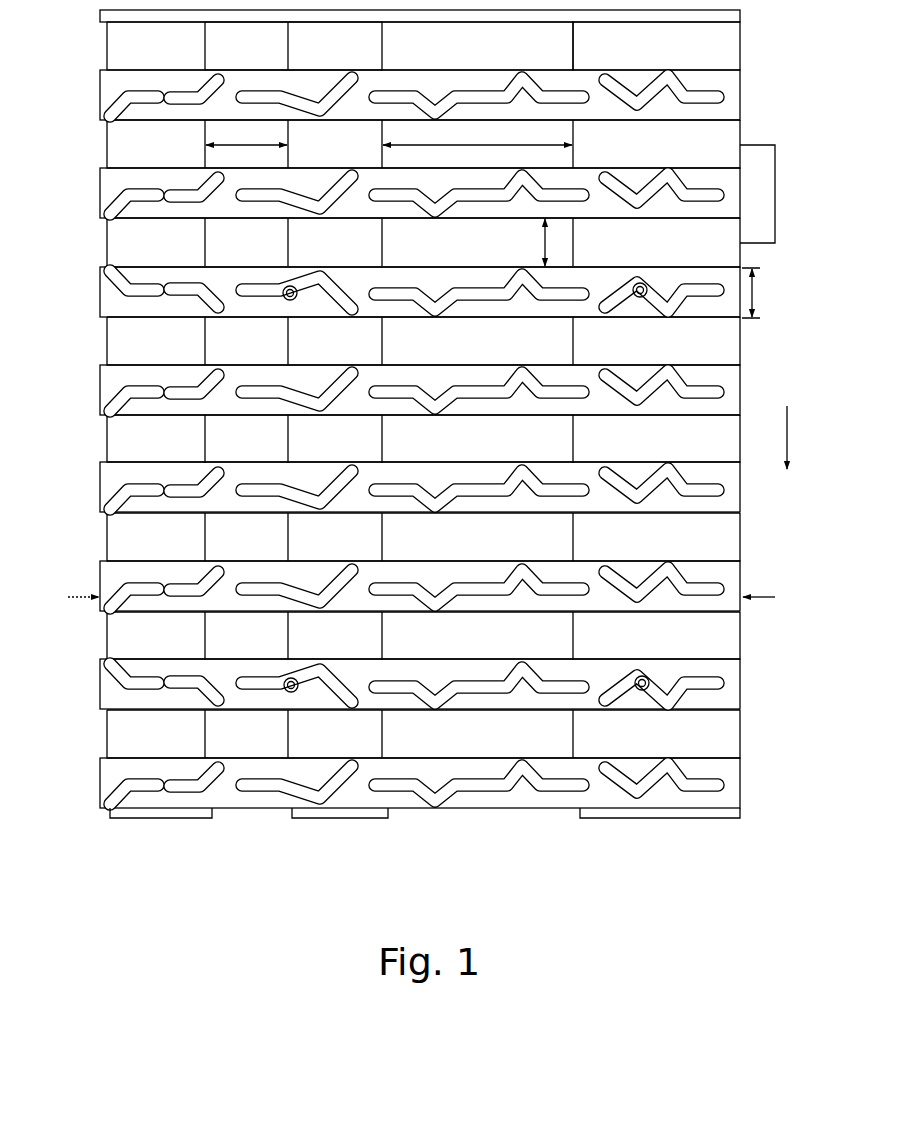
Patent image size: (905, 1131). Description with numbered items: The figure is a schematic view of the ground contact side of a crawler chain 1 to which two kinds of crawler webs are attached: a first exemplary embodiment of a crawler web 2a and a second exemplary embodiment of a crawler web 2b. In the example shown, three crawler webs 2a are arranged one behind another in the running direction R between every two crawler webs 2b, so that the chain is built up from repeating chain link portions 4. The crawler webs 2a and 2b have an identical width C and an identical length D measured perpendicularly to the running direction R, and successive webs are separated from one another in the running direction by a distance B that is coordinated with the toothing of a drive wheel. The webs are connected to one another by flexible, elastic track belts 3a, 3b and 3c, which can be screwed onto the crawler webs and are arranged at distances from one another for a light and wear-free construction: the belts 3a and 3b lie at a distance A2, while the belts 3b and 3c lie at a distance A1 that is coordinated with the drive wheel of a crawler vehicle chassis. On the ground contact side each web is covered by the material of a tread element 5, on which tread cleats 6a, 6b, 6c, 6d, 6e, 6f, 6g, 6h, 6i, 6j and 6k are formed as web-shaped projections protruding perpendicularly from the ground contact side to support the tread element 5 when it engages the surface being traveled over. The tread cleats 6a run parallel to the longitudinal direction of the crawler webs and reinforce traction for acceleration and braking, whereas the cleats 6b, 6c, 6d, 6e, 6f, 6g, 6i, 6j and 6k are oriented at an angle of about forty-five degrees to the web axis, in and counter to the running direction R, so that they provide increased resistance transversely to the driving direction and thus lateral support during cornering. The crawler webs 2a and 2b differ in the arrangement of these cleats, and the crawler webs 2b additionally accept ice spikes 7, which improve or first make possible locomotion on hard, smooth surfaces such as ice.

The crawler chain 1 is at (80, 211).
The crawler web 2a is at (98, 94).
The crawler web 2b is at (98, 273).
The track belt 3a is at (98, 43).
The track belt 3b is at (386, 42).
The track belt 3c is at (744, 45).
The chain link portion 4 is at (775, 196).
The tread element 5 is at (498, 366).
The tread cleat 6a is at (378, 440).
The tread cleat 6b is at (479, 412).
The tread cleat 6c is at (446, 410).
The tread cleat 6d is at (310, 391).
The tread cleat 6e is at (320, 408).
The tread cleat 6f is at (106, 405).
The tread cleat 6g is at (213, 379).
The tread cleat 6h is at (310, 469).
The tread cleat 6i is at (320, 279).
The tread cleat 6j is at (212, 300).
The tread cleat 6k is at (106, 282).
The ice spike 7 is at (292, 283).
The distance A1 is at (477, 135).
The distance A2 is at (246, 135).
The distance B is at (555, 242).
The width C is at (756, 293).
The running direction R is at (794, 428).
The length D is at (434, 598).